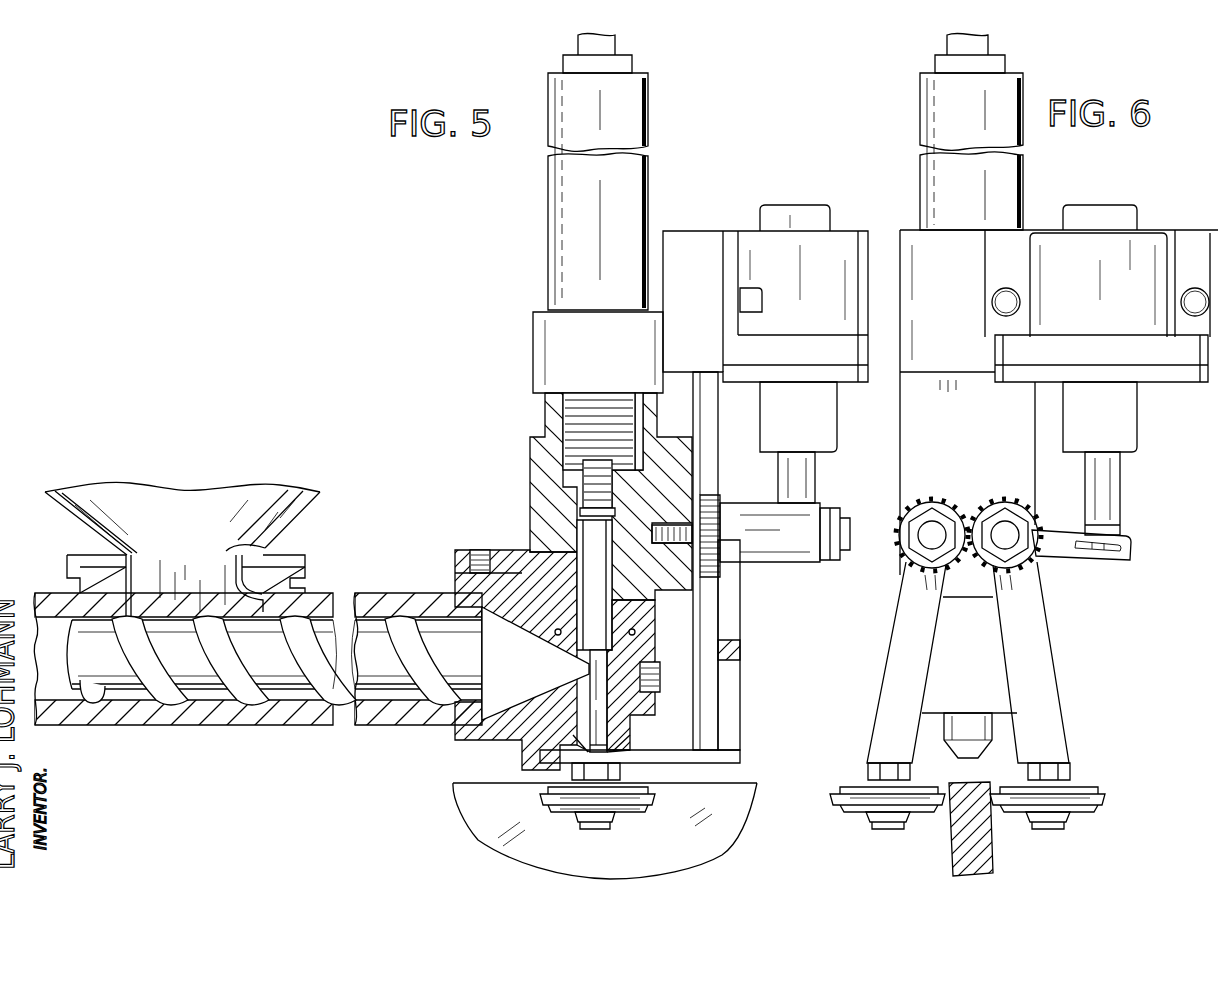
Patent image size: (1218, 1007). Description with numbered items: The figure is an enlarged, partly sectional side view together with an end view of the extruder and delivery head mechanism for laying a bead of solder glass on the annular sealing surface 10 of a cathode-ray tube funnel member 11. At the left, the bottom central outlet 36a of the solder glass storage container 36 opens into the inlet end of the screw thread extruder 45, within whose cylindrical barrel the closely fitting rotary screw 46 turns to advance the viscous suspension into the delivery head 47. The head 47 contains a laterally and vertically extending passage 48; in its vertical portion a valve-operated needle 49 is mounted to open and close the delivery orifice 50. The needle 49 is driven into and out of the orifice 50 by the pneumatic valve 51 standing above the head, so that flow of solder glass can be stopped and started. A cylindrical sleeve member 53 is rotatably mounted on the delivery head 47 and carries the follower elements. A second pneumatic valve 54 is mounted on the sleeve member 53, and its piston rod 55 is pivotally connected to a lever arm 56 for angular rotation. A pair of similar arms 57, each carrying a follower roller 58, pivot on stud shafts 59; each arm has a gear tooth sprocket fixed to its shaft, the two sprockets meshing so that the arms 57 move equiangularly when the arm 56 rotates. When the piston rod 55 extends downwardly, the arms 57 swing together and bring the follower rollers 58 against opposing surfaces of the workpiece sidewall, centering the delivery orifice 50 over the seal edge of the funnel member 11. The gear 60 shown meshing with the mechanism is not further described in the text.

In FIG. 5, the annular sealing surface 10 is at (742, 766).
In FIG. 6, the annular sealing surface 10 is at (972, 785).
In FIG. 5, the funnel member 11 is at (705, 845).
In FIG. 6, the funnel member 11 is at (996, 862).
In FIG. 5, the solder glass storage container 36 is at (46, 500).
In FIG. 5, the central outlet 36a is at (227, 547).
In FIG. 5, the screw thread extruder 45 is at (382, 724).
In FIG. 5, the rotary screw 46 is at (395, 630).
In FIG. 5, the delivery head 47 is at (570, 525).
In FIG. 5, the passage 48 is at (545, 682).
In FIG. 5, the needle 49 is at (597, 600).
In FIG. 5, the delivery orifice 50 is at (600, 752).
In FIG. 6, the delivery orifice 50 is at (962, 753).
In FIG. 5, the pneumatic valve 51 is at (548, 240).
In FIG. 6, the pneumatic valve 51 is at (1025, 166).
In FIG. 5, the cylindrical sleeve member 53 is at (532, 455).
In FIG. 6, the cylindrical sleeve member 53 is at (906, 447).
In FIG. 5, the pneumatic valve 54 is at (838, 247).
In FIG. 6, the pneumatic valve 54 is at (1138, 216).
In FIG. 6, the piston rod 55 is at (1122, 510).
In FIG. 6, the lever arm 56 is at (1100, 565).
In FIG. 6, the arms 57 is at (885, 654).
In FIG. 5, the follower roller 58 is at (597, 808).
In FIG. 6, the follower roller 58 is at (846, 806).
In FIG. 5, the stud shafts 59 is at (671, 525).
In FIG. 5, the gear 60 is at (712, 495).